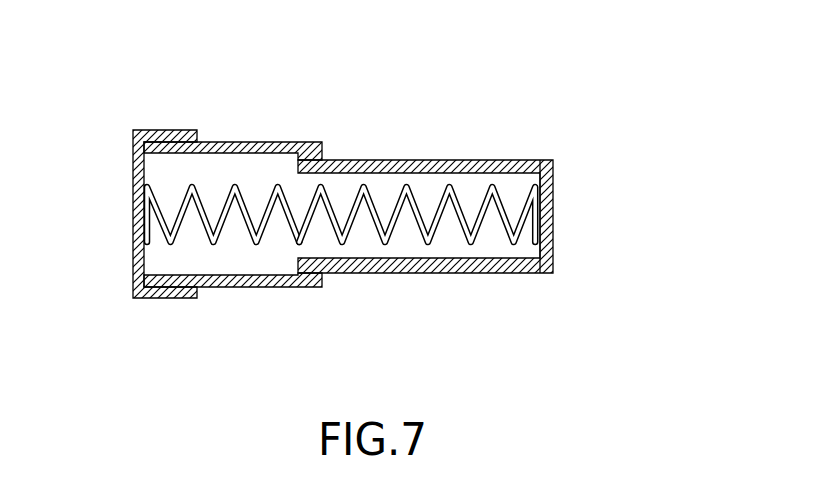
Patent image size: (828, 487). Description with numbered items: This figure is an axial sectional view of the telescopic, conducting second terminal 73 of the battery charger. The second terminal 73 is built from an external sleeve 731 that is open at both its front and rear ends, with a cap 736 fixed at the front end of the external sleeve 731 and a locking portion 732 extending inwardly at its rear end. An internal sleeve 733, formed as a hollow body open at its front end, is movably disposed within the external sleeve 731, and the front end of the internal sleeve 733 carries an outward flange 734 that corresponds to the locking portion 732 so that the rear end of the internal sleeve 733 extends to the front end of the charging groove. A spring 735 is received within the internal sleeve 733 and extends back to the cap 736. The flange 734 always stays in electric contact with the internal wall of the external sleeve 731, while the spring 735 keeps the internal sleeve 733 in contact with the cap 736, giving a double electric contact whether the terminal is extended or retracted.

The second terminal 73 is at (563, 69).
The external sleeve 731 is at (300, 185).
The locking portion 732 is at (323, 149).
The internal sleeve 733 is at (530, 160).
The outward flange 734 is at (305, 190).
The spring 735 is at (237, 190).
The cap 736 is at (133, 192).